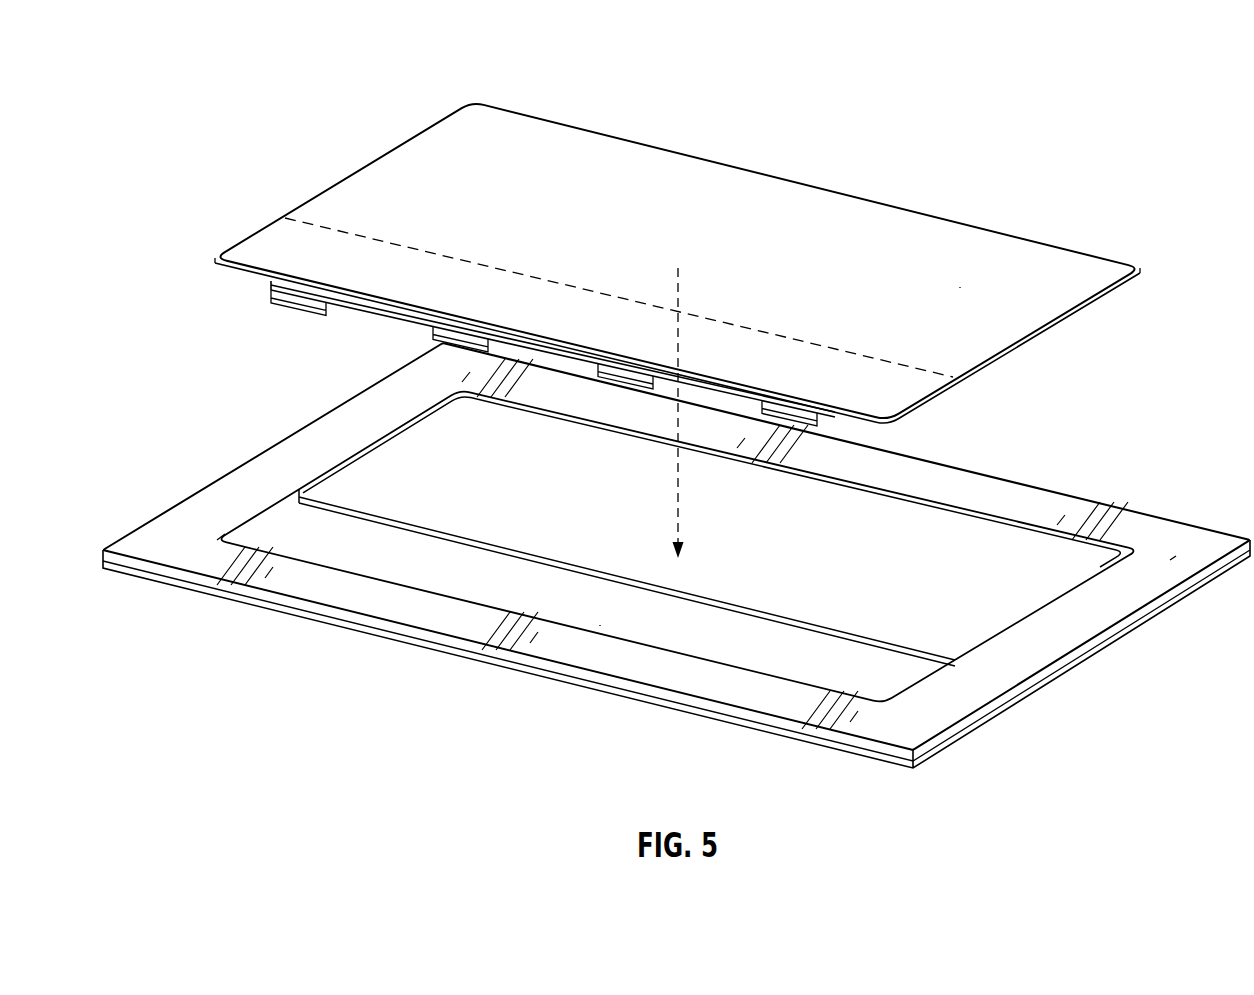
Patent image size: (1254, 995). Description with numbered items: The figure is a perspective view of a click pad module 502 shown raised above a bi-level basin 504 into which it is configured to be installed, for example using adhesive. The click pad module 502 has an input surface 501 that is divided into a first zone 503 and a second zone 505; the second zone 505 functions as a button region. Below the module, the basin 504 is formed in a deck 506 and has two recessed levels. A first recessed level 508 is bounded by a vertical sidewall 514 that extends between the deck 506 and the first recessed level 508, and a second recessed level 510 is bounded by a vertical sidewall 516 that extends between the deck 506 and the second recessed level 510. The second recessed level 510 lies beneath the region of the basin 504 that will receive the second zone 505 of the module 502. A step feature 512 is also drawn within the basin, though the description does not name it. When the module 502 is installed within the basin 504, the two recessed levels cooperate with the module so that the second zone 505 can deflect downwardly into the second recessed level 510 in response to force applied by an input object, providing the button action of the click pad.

The input surface 501 is at (605, 188).
The click pad module 502 is at (484, 105).
The first zone 503 is at (1003, 315).
The bi-level basin 504 is at (808, 740).
The second zone 505 is at (883, 398).
The deck 506 is at (1170, 560).
The first recessed level 508 is at (752, 546).
The second recessed level 510 is at (645, 621).
The ledge 512 is at (465, 537).
The vertical sidewall 514 is at (338, 455).
The vertical sidewall 516 is at (240, 520).